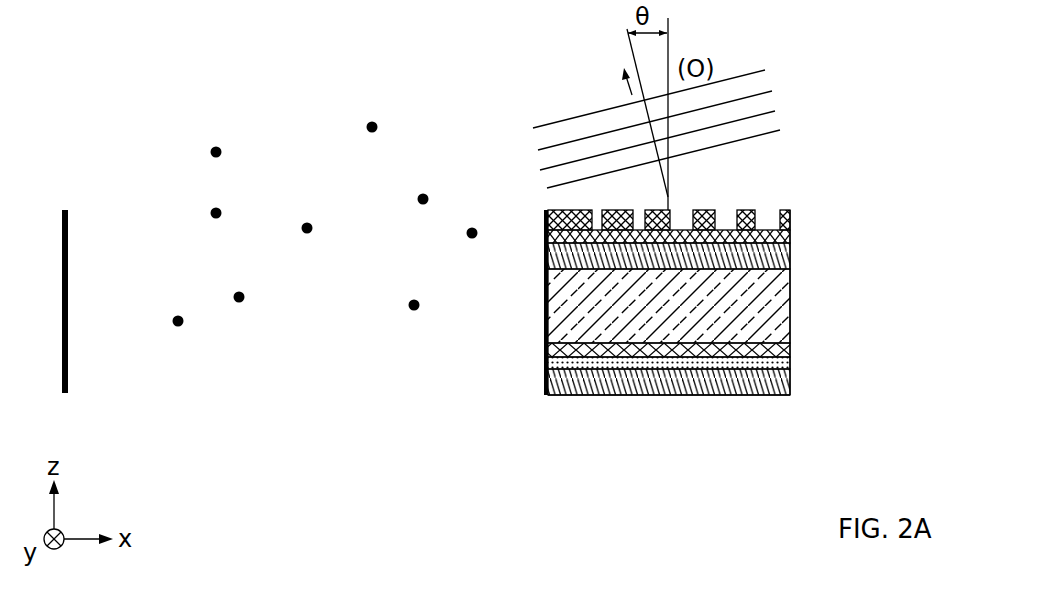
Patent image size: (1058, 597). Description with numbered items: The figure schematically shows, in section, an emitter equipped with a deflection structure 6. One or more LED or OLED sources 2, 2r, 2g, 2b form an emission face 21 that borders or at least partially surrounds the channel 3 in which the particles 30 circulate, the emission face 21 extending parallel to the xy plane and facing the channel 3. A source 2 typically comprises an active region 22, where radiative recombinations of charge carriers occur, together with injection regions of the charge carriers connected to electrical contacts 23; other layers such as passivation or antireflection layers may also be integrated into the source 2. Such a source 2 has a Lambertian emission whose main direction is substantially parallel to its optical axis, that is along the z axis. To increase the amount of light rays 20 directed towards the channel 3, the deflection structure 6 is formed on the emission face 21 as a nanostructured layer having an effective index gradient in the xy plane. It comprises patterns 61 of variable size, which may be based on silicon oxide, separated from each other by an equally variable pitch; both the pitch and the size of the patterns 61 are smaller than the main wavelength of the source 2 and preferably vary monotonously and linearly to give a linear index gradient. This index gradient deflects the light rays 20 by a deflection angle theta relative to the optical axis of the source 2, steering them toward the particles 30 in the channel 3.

The particles 30 is at (216, 152).
The channel 3 is at (198, 285).
The light rays 20 is at (780, 130).
The patterns 61 is at (663, 210).
The emission face 21 is at (764, 215).
The deflection structure 6 is at (696, 185).
The electrical contacts 23 is at (763, 260).
The active region 22 is at (763, 327).
The source 2 is at (885, 398).
The (O)LED source 2r is at (695, 261).
The (O)LED source 2g is at (695, 261).
The (O)LED source 2b is at (695, 261).